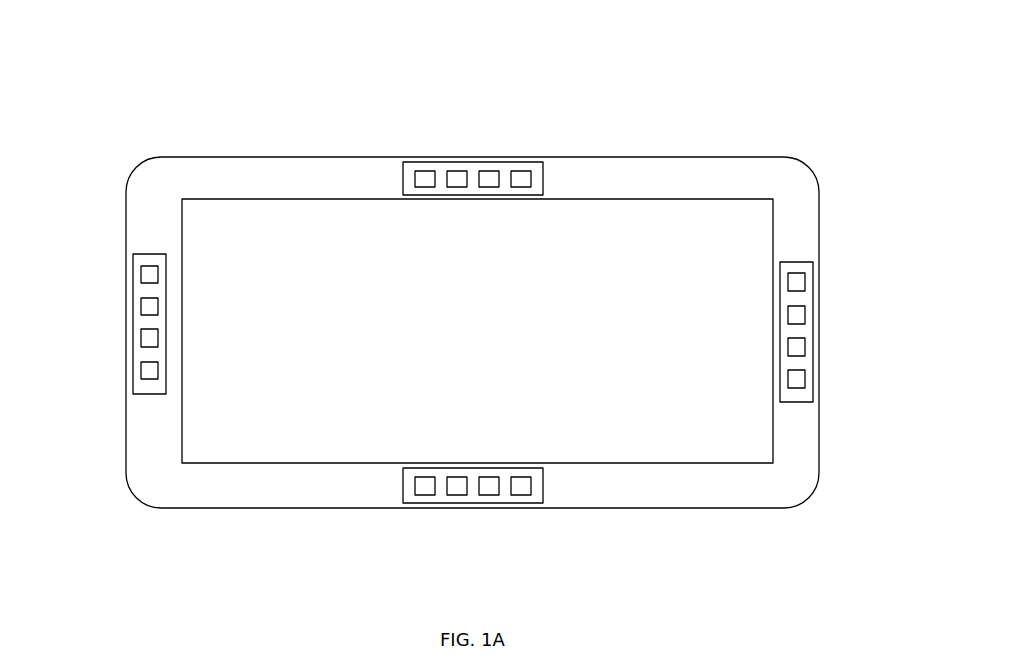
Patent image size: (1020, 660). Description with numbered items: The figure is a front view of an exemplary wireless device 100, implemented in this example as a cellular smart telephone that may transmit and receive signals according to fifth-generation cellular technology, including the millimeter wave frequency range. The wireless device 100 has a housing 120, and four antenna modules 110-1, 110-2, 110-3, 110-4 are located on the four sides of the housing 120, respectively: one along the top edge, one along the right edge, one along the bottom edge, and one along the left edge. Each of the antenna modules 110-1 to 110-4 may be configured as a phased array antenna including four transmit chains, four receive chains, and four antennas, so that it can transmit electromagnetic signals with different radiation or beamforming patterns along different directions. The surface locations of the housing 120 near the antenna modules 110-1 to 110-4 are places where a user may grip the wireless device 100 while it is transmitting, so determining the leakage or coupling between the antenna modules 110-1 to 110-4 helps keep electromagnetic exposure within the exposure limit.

The wireless device 100 is at (656, 90).
The housing 120 is at (256, 157).
The antenna module 110-1 is at (543, 150).
The antenna module 110-2 is at (826, 260).
The antenna module 110-3 is at (543, 517).
The antenna module 110-4 is at (119, 254).